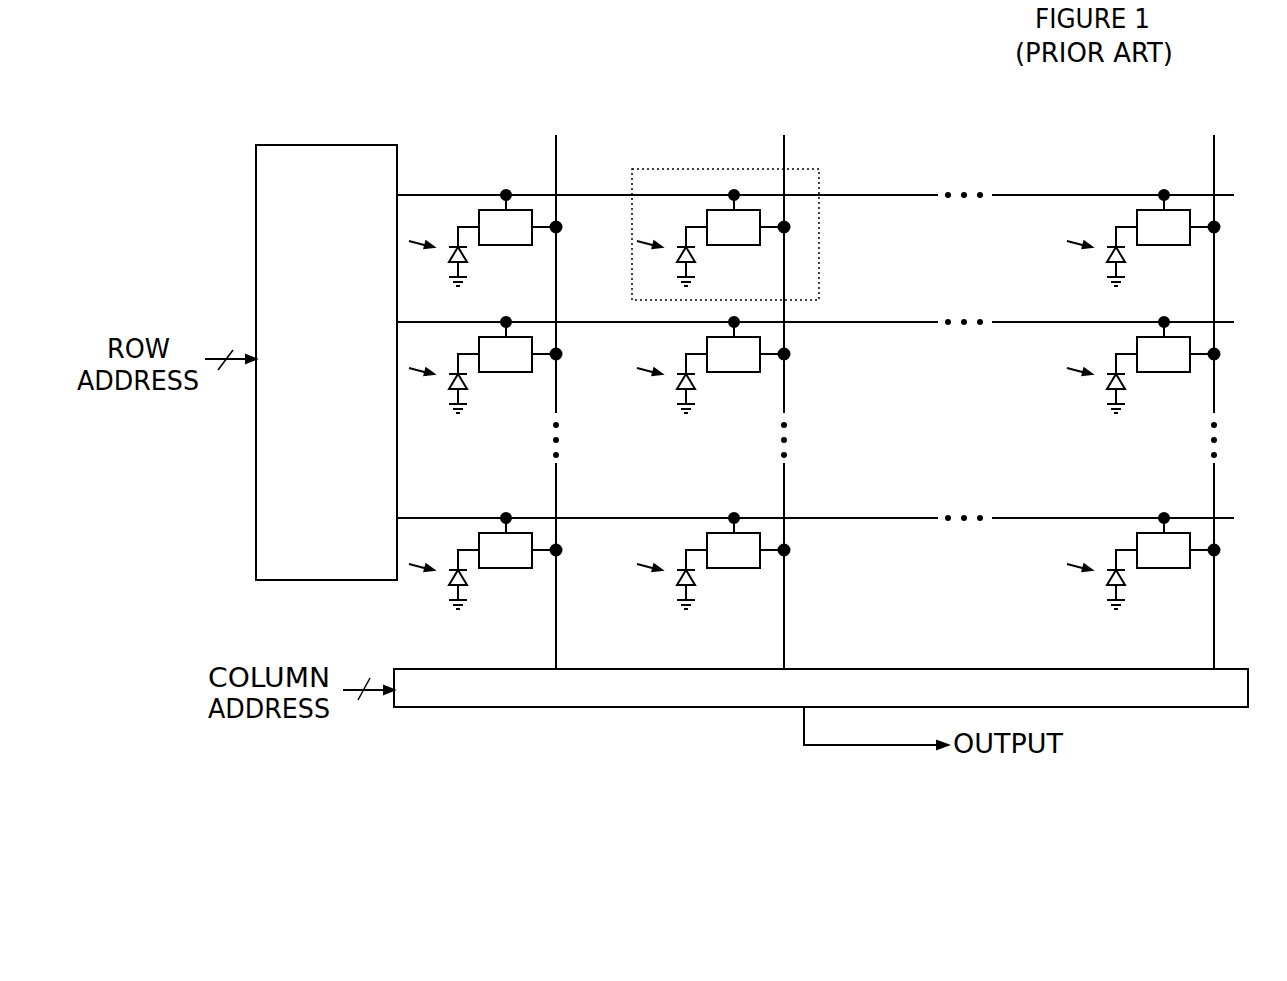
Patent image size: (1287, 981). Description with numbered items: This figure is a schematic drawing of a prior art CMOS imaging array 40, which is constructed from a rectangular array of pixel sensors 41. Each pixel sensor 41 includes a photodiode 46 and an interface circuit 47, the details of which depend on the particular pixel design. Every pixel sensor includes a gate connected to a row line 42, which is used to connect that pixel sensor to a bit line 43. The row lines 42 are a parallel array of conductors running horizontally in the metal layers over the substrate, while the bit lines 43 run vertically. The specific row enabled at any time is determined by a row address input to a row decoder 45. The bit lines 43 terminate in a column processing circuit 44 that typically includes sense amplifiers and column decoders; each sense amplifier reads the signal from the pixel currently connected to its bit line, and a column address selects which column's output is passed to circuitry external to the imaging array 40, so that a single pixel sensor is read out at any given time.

The imaging array 40 is at (178, 132).
The pixel sensor 41 is at (692, 169).
The row line 42 is at (870, 194).
The bit line 43 is at (786, 385).
The column processing circuit 44 is at (904, 668).
The row decoder 45 is at (341, 145).
The photodiode 46 is at (466, 251).
The interface circuit 47 is at (493, 215).